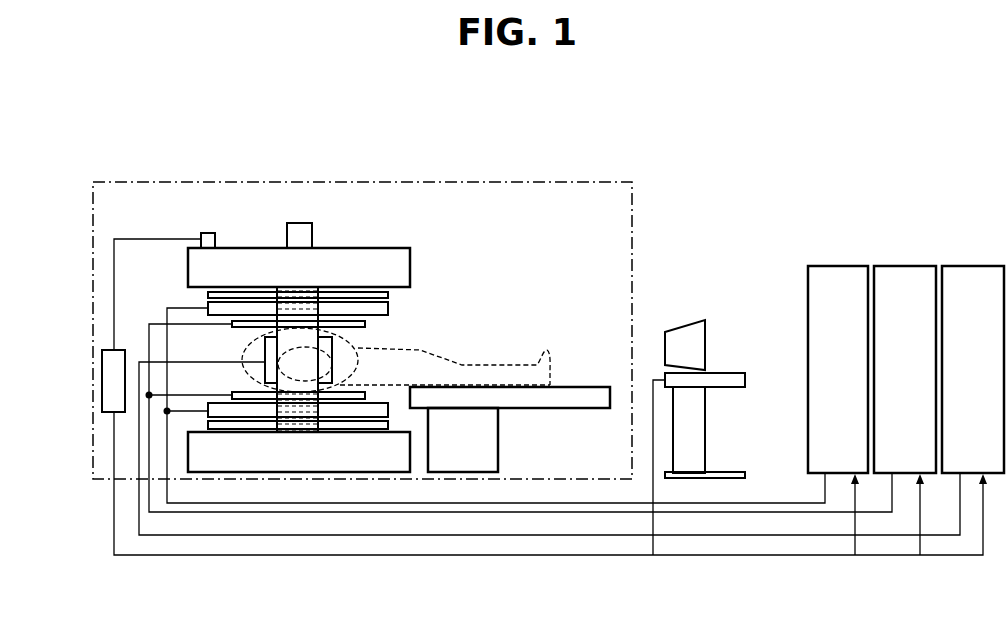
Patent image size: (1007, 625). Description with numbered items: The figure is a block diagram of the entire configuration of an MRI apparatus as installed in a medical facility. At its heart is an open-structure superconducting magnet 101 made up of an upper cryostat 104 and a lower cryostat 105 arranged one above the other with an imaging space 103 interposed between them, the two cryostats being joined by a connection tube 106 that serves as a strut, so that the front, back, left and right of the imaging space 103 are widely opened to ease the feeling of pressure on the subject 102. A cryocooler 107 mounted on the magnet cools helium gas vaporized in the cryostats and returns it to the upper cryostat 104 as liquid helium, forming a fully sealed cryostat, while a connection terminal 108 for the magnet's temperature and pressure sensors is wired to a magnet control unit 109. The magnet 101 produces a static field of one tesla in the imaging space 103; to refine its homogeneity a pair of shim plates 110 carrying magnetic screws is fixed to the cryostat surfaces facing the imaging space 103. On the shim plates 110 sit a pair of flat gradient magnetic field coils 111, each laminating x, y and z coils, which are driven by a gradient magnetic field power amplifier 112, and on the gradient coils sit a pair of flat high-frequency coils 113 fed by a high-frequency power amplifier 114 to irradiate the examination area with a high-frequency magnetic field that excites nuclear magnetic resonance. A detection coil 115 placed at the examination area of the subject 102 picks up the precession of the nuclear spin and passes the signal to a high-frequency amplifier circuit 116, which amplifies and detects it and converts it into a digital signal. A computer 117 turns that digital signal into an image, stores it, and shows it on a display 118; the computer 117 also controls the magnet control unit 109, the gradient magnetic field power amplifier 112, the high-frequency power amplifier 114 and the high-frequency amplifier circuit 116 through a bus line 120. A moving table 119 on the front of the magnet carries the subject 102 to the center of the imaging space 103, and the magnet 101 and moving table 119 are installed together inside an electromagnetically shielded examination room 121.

The open-structure superconducting magnet 101 is at (272, 200).
The subject 102 is at (552, 360).
The imaging space 103 is at (250, 340).
The upper cryostat 104 is at (238, 248).
The lower cryostat 105 is at (227, 472).
The connection tube 106 is at (322, 307).
The cryocooler 107 is at (300, 222).
The connection terminal 108 is at (207, 233).
The magnet control unit 109 is at (104, 376).
The shim plate 110 is at (390, 296).
The gradient magnetic field coil 111 is at (390, 310).
The gradient magnetic field power amplifier 112 is at (835, 266).
The high-frequency coil 113 is at (367, 325).
The high-frequency power amplifier 114 is at (900, 266).
The detection coil 115 is at (342, 337).
The high-frequency amplifier circuit 116 is at (972, 266).
The computer 117 is at (733, 373).
The display 118 is at (690, 323).
The moving table 119 is at (498, 442).
The bus line 120 is at (525, 557).
The examination room 121 is at (468, 182).